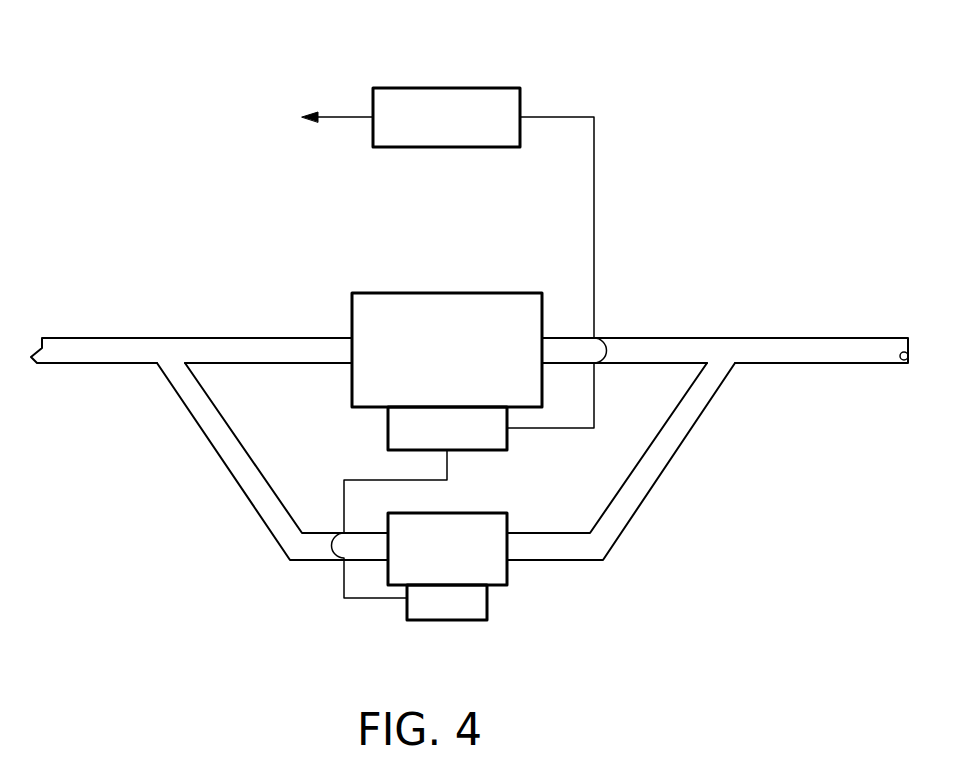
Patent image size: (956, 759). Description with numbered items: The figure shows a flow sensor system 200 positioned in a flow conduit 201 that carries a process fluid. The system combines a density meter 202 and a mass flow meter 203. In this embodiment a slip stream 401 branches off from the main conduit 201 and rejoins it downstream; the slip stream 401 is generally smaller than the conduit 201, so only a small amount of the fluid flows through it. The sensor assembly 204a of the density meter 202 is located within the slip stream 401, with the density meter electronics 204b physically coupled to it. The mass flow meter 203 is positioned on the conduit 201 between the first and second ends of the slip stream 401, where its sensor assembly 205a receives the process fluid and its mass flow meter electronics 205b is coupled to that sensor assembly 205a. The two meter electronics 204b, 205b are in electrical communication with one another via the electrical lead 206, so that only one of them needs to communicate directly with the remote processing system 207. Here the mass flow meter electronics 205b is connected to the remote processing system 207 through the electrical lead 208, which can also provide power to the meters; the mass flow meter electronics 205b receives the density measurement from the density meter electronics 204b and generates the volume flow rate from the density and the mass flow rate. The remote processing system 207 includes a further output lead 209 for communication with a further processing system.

The flow sensor system 200 is at (760, 159).
The flow conduit 201 is at (225, 346).
The density meter 202 is at (499, 585).
The mass flow meter 203 is at (449, 334).
The sensor assembly 204a is at (447, 549).
The density meter electronics 204b is at (447, 602).
The sensor assembly 205a is at (447, 350).
The mass flow meter electronics 205b is at (447, 428).
The electrical lead 206 is at (368, 478).
The remote processing system 207 is at (446, 117).
The electrical lead 208 is at (596, 164).
The output lead 209 is at (340, 116).
The slip stream 401 is at (243, 476).